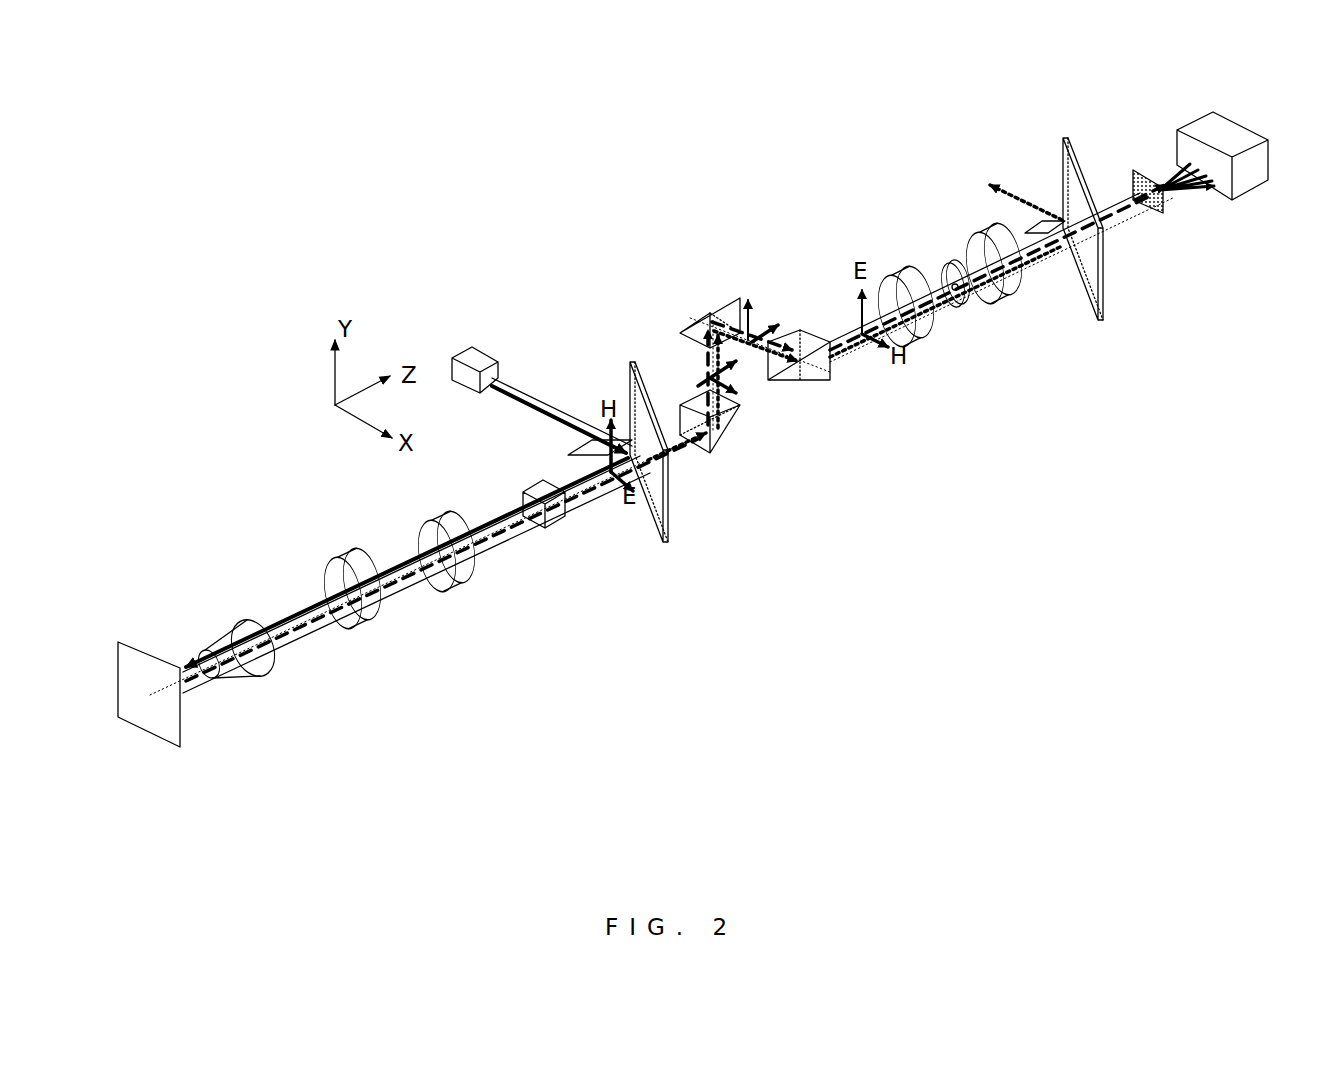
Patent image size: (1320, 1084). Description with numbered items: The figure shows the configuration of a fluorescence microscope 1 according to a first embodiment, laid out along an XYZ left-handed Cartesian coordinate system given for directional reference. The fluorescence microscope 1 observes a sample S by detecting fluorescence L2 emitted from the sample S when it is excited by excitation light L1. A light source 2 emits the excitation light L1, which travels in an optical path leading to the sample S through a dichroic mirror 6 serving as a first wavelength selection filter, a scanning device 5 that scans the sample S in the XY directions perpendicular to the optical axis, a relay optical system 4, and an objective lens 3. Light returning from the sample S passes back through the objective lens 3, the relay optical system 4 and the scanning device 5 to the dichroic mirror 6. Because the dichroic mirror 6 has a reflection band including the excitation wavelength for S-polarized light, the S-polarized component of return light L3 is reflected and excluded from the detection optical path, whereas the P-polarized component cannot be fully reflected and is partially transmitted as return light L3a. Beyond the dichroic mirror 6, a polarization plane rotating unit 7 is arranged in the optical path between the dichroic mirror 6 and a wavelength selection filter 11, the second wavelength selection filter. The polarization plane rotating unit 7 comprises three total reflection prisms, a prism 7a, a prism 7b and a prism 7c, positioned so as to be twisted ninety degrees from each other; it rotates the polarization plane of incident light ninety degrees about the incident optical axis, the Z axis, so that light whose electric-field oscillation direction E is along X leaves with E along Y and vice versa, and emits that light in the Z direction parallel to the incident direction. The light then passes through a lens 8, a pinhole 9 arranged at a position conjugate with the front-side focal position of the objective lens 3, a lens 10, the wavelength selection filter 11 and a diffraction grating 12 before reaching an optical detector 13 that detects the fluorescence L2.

The fluorescence microscope 1 is at (149, 94).
The light source 2 is at (478, 358).
The objective lens 3 is at (262, 664).
The relay optical system 4 is at (505, 578).
The scanning device 5 is at (556, 520).
The dichroic mirror 6 is at (666, 545).
The polarization plane rotating unit 7 is at (729, 314).
The prism 7a is at (690, 402).
The prism 7b is at (730, 308).
The prism 7c is at (797, 297).
The lens 8 is at (925, 330).
The pinhole 9 is at (965, 305).
The lens 10 is at (1020, 290).
The wavelength selection filter 11 is at (1100, 320).
The diffraction grating 12 is at (1160, 212).
The optical detector 13 is at (1250, 180).
The sample S is at (167, 732).
The excitation light L1 is at (258, 612).
The fluorescence L2 is at (380, 558).
The return light L3 is at (478, 524).
The return light L3a is at (690, 462).